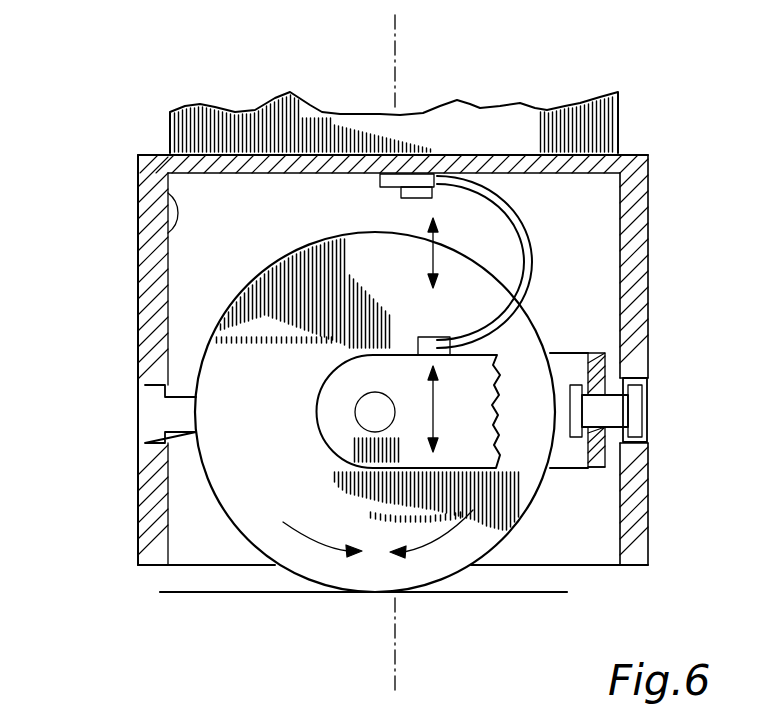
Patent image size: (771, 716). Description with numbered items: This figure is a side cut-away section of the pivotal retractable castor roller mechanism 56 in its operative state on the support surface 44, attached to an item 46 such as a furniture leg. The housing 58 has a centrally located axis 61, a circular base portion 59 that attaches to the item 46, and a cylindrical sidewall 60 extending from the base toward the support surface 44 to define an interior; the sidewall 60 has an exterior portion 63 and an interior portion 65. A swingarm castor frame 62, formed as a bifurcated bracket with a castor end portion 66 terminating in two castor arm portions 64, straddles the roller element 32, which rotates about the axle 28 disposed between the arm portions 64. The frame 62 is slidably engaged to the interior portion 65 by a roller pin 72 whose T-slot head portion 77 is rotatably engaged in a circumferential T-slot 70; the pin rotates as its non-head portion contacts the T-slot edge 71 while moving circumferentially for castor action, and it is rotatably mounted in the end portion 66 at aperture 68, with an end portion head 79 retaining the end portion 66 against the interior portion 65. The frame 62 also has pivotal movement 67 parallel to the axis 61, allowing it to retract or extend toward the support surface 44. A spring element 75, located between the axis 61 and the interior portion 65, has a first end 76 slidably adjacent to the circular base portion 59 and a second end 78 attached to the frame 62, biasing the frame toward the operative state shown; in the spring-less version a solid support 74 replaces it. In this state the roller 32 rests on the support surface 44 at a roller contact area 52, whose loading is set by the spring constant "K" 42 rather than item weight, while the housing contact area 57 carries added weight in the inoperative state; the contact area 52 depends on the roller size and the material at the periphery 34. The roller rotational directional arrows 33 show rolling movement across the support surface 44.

The axle 28 is at (367, 412).
The roller element 32 is at (266, 292).
The roller rotational directional arrows 33 is at (310, 540).
The periphery of the roller 34 is at (200, 362).
The spring constant "K" 42 is at (428, 228).
The support surface 44 is at (513, 595).
The item 46 is at (235, 122).
The roller contact area 52 is at (378, 593).
The pivotal retractable castor roller mechanism 56 is at (126, 129).
The contact area of the housing 57 is at (145, 568).
The housing 58 is at (138, 157).
The circular base portion 59 is at (305, 150).
The cylindrical sidewall 60 is at (138, 542).
The centrally located axis 61 is at (399, 46).
The swingarm castor frame 62 is at (605, 358).
The exterior portion of the sidewall 63 is at (138, 487).
The castor arm portions 64 is at (320, 430).
The interior portion of the sidewall 65 is at (172, 197).
The castor end portion 66 is at (605, 458).
The pivotal movement 67 is at (438, 405).
The aperture 68 is at (628, 385).
The circumferential T-slot 70 is at (160, 410).
The T-slot edge 71 is at (628, 440).
The roller pin 72 is at (640, 398).
The solid support 74 is at (522, 226).
The spring element 75 is at (530, 257).
The first end of the spring element 76 is at (421, 186).
The T-slot head portion 77 is at (645, 415).
The second end of the spring element 78 is at (441, 332).
The end portion head 79 is at (572, 440).